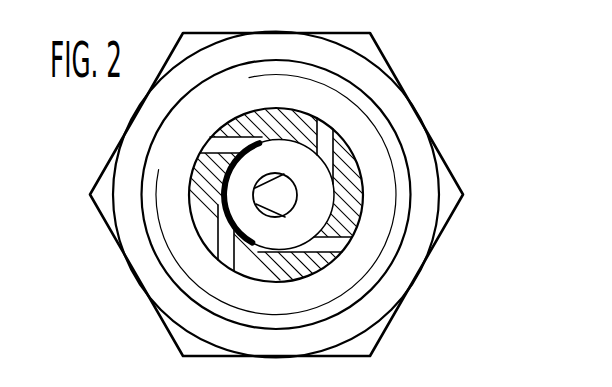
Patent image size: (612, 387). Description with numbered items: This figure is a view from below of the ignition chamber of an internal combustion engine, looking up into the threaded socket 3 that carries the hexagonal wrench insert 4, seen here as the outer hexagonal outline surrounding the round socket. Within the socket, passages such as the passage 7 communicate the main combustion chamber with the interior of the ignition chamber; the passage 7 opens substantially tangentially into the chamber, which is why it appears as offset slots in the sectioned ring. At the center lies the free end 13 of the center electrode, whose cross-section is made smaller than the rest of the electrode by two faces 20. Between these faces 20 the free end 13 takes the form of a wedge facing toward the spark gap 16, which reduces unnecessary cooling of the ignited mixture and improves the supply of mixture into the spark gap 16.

The threaded socket 3 is at (432, 134).
The hexagonal wrench insert 4 is at (377, 59).
The passage 7 is at (233, 256).
The free end 13 is at (275, 195).
The spark gap 16 is at (236, 194).
The faces 20 is at (271, 180).